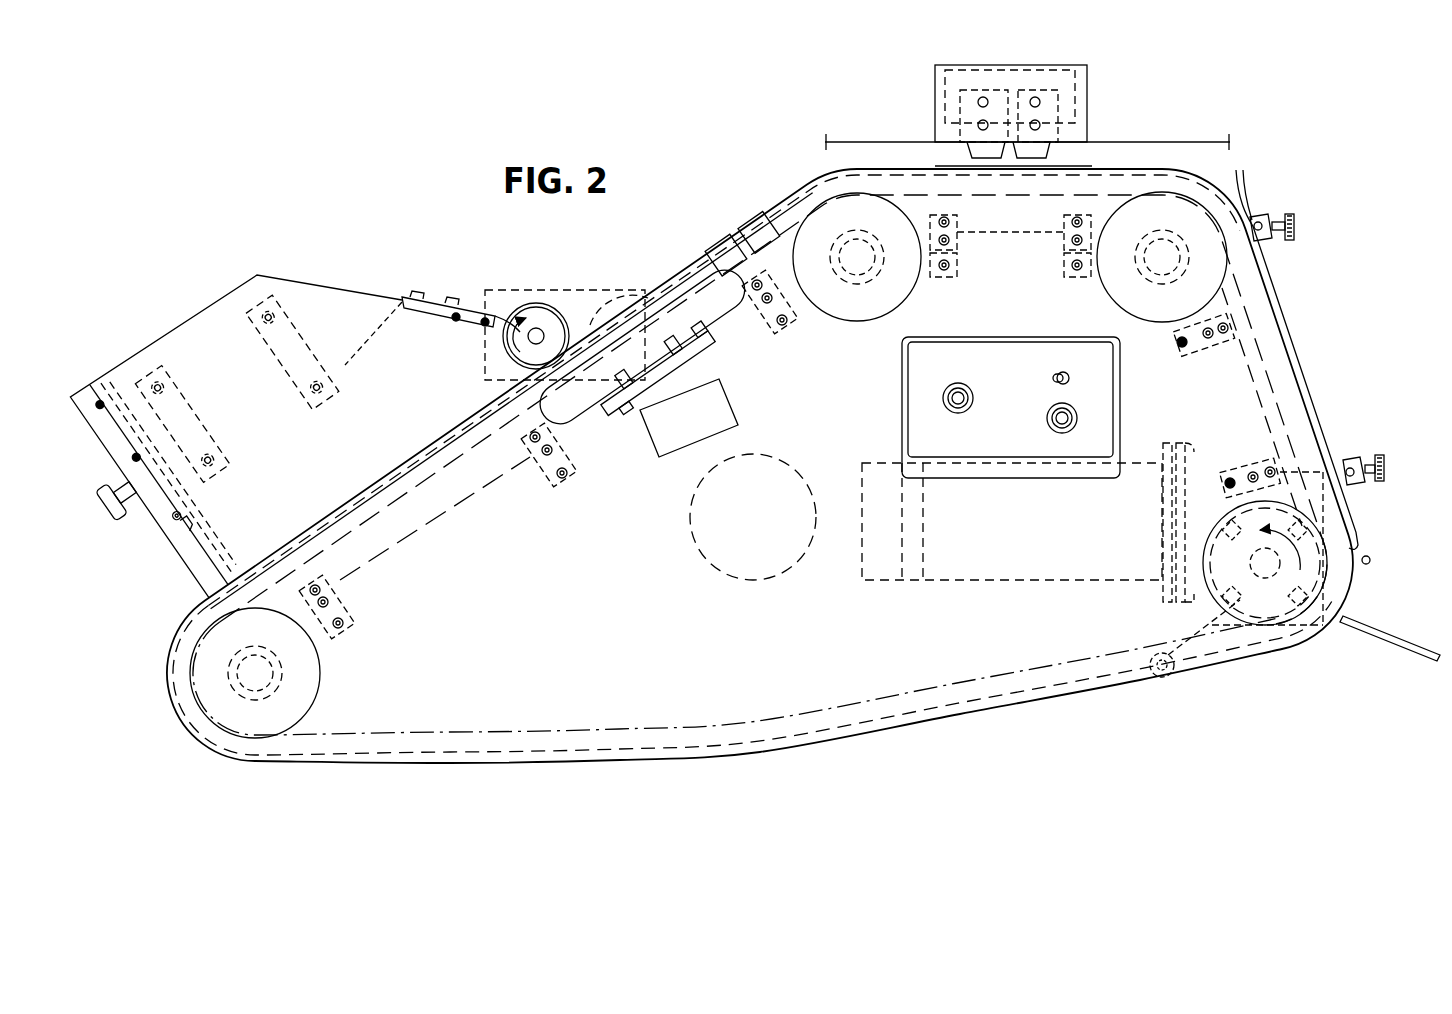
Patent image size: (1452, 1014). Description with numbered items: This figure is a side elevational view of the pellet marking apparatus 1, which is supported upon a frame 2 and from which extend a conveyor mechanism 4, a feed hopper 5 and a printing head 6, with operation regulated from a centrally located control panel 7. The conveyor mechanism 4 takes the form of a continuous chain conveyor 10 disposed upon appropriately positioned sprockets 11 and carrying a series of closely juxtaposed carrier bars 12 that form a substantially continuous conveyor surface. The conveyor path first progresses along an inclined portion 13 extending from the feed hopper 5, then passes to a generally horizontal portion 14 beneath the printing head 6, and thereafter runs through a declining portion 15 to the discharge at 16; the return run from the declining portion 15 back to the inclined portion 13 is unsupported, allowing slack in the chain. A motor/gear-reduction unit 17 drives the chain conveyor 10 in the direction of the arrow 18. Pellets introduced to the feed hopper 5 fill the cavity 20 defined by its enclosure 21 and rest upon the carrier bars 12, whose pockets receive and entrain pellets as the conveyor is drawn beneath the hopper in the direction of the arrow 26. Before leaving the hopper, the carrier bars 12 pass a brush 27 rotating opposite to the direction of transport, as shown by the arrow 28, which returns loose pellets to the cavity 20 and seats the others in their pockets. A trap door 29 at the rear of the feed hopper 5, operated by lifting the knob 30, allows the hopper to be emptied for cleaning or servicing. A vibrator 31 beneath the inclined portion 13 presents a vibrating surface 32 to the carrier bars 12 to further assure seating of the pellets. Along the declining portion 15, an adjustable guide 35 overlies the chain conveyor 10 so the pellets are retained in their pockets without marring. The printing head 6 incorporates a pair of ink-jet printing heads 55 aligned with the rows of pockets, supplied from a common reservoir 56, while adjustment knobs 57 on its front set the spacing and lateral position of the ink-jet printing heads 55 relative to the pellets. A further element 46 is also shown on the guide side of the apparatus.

The pellet marking apparatus 1 is at (788, 186).
The frame 2 is at (1192, 140).
The conveyor mechanism 4 is at (392, 768).
The feed hopper 5 is at (158, 485).
The printing head 6 is at (1094, 60).
The control panel 7 is at (1126, 409).
The chain conveyor 10 is at (752, 722).
The sprockets 11 is at (872, 322).
The carrier bars 12 is at (742, 244).
The inclined portion 13 is at (610, 286).
The horizontal portion 14 is at (898, 160).
The declining portion 15 is at (1294, 312).
The discharge 16 is at (1372, 634).
The motor/gear-reduction unit 17 is at (1003, 568).
The arrow 18 is at (1288, 578).
The cavity 20 is at (245, 424).
The enclosure 21 is at (190, 316).
The arrow 26 is at (402, 437).
The brush 27 is at (530, 316).
The arrow 28 is at (525, 345).
The trap door 29 is at (186, 566).
The knob 30 is at (120, 497).
The vibrator 31 is at (722, 400).
The vibrating surface 32 is at (656, 370).
The guide 35 is at (1312, 378).
The screw 46 is at (1385, 548).
The ink-jet printing heads 55 is at (1020, 95).
The reservoir 56 is at (975, 72).
The adjustment knobs 57 is at (978, 125).